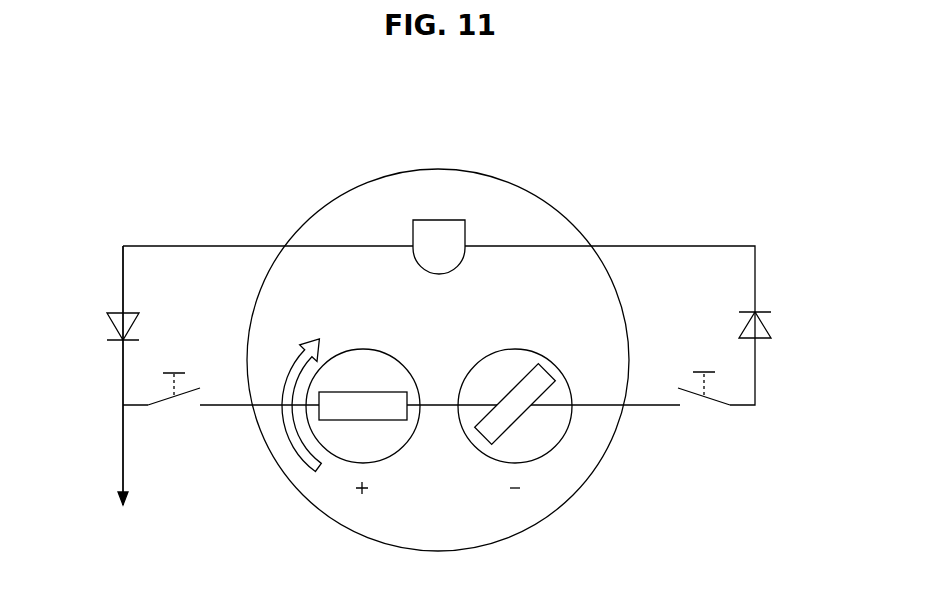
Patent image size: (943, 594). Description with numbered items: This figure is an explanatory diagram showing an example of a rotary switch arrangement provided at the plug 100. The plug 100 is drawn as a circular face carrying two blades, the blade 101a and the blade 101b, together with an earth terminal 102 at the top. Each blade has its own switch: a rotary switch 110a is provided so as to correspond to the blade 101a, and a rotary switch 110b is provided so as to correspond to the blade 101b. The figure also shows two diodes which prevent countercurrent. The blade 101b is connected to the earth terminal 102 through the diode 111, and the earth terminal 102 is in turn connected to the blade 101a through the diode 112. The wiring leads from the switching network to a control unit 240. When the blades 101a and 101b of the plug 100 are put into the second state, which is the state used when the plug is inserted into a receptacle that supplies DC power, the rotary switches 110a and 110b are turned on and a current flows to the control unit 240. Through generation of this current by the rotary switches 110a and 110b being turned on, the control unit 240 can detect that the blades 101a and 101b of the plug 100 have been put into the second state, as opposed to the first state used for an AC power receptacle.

The plug 100 is at (530, 149).
The earth terminal 102 is at (468, 228).
The blade 101a is at (340, 421).
The blade 101b is at (517, 423).
The diode 111 is at (767, 325).
The diode 112 is at (108, 325).
The rotary switch 110a is at (183, 407).
The rotary switch 110b is at (697, 408).
The control unit 240 is at (124, 408).